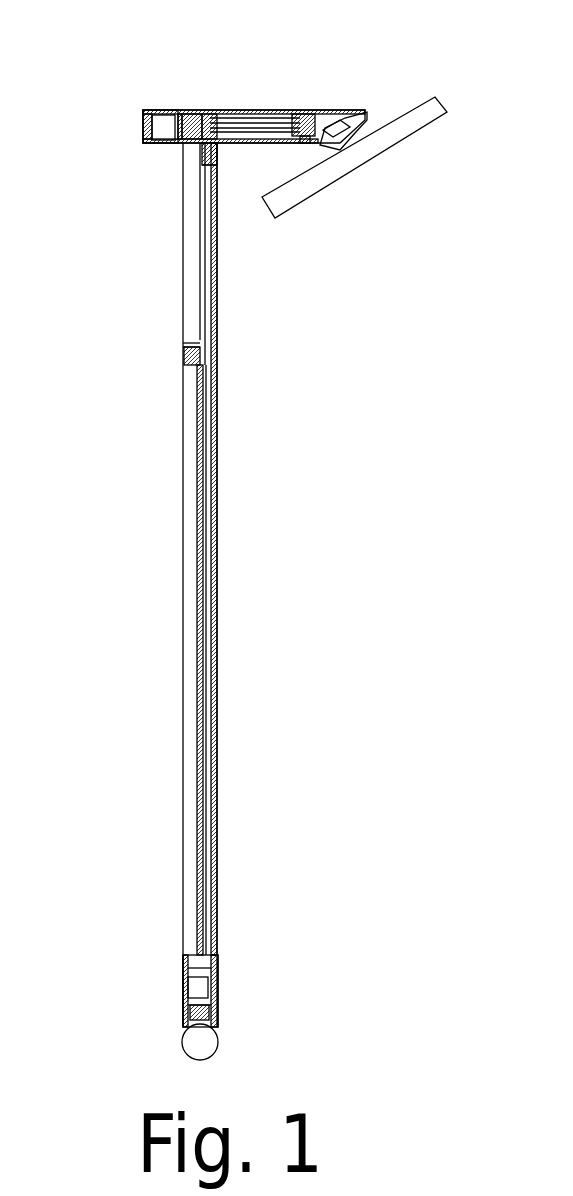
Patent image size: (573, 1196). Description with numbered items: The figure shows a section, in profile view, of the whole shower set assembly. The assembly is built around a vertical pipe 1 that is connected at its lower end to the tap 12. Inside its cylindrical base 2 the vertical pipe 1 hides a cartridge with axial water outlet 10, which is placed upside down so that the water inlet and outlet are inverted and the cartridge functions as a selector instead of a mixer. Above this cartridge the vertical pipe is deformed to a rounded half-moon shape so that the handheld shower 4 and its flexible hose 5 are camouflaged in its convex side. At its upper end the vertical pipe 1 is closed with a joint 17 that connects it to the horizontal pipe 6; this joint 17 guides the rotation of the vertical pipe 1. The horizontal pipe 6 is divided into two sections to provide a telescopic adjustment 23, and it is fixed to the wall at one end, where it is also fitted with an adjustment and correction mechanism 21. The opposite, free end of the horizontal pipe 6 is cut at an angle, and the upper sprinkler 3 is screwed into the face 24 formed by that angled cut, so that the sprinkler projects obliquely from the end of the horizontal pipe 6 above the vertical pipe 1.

The vertical pipe 1 is at (215, 485).
The cylindrical base 2 is at (220, 982).
The upper sprinkler 3 is at (393, 157).
The handheld shower 4 is at (192, 313).
The flexible hose 5 is at (190, 490).
The horizontal pipe 6 is at (238, 108).
The cartridge with axial water outlet 10 is at (197, 988).
The tap 12 is at (188, 1048).
The joint 17 is at (220, 162).
The adjustment and correction mechanism 21 is at (163, 152).
The telescopic adjustment 23 is at (310, 110).
The face 24 is at (383, 113).